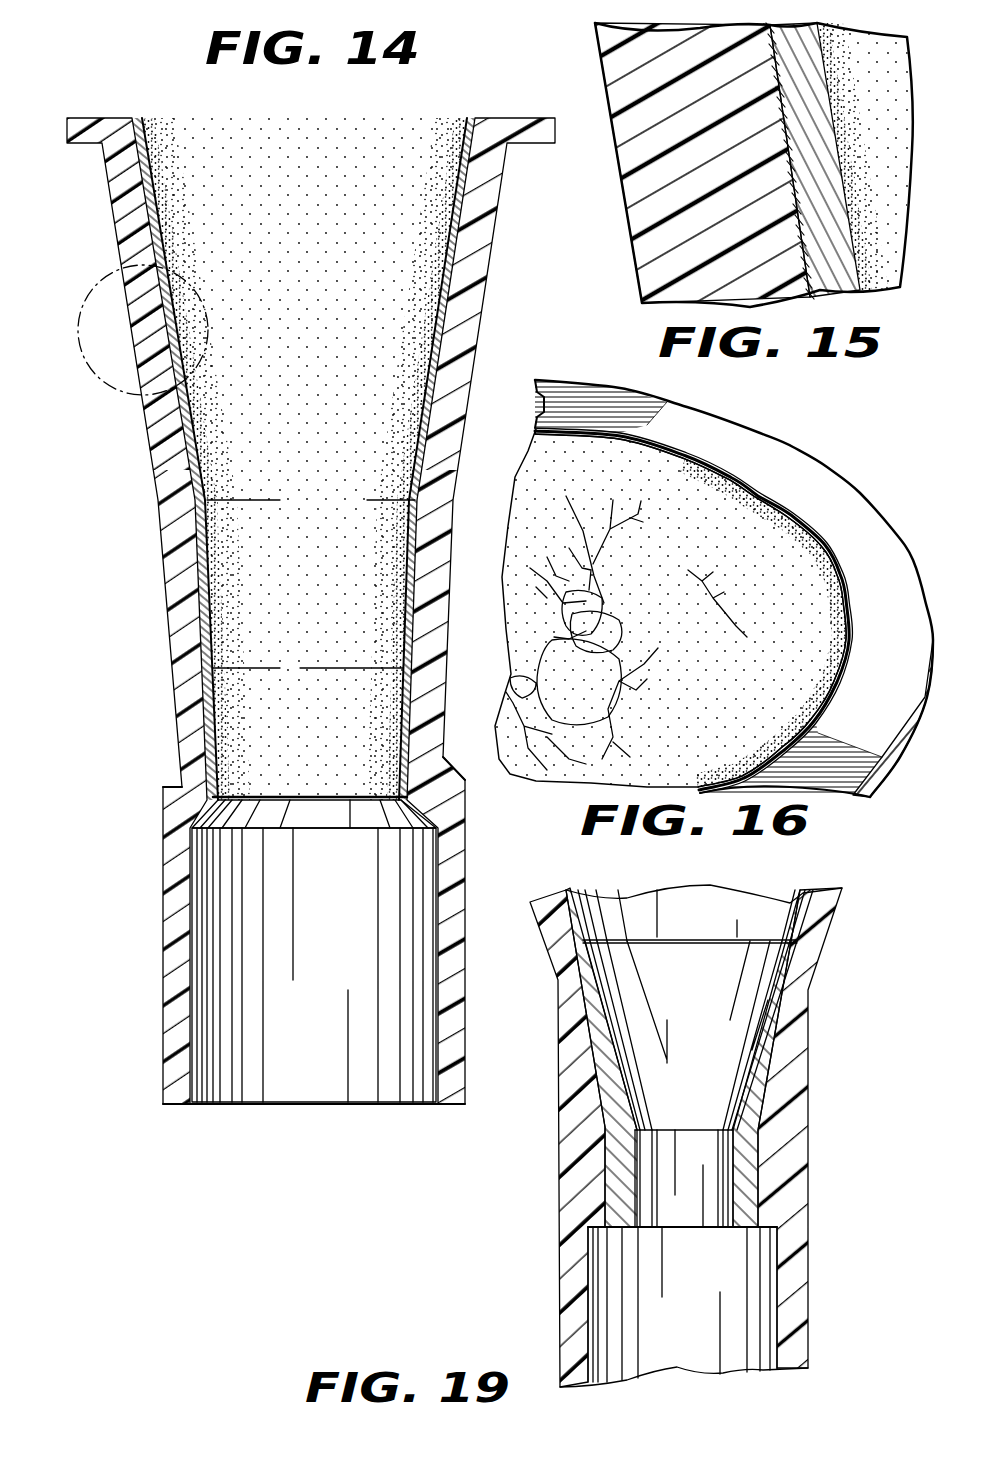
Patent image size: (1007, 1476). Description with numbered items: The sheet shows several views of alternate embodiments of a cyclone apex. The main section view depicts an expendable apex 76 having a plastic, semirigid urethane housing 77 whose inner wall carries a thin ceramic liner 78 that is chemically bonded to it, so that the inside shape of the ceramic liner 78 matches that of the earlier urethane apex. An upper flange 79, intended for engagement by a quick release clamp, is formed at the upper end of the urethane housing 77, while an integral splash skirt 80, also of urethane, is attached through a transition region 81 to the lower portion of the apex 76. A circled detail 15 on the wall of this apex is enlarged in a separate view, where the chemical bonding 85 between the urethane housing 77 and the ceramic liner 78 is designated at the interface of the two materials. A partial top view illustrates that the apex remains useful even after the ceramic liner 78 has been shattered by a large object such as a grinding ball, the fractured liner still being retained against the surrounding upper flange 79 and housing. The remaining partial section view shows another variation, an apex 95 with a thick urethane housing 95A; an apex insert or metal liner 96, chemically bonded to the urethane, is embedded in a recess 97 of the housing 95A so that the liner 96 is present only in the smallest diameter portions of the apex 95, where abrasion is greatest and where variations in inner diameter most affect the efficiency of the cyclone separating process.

In FIG. 14, the detail 15 is at (82, 356).
In FIG. 14, the expendable apex 76 is at (291, 611).
In FIG. 14, the urethane housing 77 is at (152, 414).
In FIG. 15, the urethane housing 77 is at (647, 255).
In FIG. 14, the ceramic liner 78 is at (178, 538).
In FIG. 15, the ceramic liner 78 is at (800, 213).
In FIG. 16, the ceramic liner 78 is at (808, 563).
In FIG. 16, the upper flange 79 is at (843, 497).
In FIG. 14, the integral splash skirt 80 is at (178, 904).
In FIG. 14, the transition region 81 is at (183, 790).
In FIG. 15, the chemical bonding 85 is at (770, 128).
In FIG. 19, the apex 95 is at (691, 1136).
In FIG. 19, the urethane housing 95A is at (835, 920).
In FIG. 19, the liner 96 is at (763, 1057).
In FIG. 19, the recess 97 is at (583, 987).